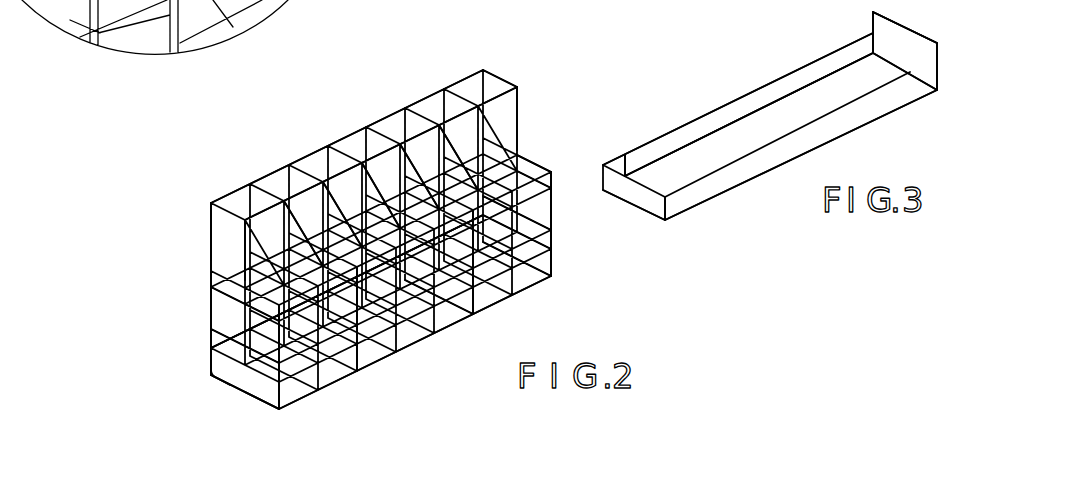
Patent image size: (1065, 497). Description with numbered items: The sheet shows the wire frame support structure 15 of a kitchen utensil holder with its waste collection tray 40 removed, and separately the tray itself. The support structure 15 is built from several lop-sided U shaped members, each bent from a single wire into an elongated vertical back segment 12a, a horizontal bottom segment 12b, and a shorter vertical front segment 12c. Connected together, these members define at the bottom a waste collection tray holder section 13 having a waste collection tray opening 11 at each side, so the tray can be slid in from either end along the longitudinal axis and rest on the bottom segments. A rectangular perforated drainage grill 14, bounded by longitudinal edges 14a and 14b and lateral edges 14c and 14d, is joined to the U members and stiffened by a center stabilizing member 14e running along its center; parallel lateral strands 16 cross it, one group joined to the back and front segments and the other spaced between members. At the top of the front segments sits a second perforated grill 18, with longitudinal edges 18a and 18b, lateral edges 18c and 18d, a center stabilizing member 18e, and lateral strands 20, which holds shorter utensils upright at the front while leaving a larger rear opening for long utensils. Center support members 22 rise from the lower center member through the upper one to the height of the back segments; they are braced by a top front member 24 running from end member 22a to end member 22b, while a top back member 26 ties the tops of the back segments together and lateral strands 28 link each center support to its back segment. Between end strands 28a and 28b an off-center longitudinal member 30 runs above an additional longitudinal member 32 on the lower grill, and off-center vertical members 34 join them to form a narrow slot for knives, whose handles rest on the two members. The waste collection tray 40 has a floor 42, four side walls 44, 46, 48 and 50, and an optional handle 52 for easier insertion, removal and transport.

In FIG. 2, the waste collection tray opening 11 is at (268, 395).
In FIG. 3, the waste collection tray opening 11 is at (722, 2).
In FIG. 2, the back segment 12a is at (210, 263).
In FIG. 2, the bottom segment 12b is at (210, 381).
In FIG. 2, the front segment 12c is at (281, 404).
In FIG. 2, the waste collection tray holder section 13 is at (552, 262).
In FIG. 2, the perforated drainage grill 14 is at (233, 347).
In FIG. 2, the longitudinal edge 14a is at (220, 333).
In FIG. 2, the longitudinal edge 14b is at (423, 332).
In FIG. 2, the lateral edge 14c is at (237, 363).
In FIG. 2, the lateral edge 14d is at (548, 237).
In FIG. 2, the center stabilizing member 14e is at (258, 378).
In FIG. 2, the support structure 15 is at (78, 318).
In FIG. 2, the lateral strands 16 is at (377, 352).
In FIG. 2, the perforated grill 18 is at (540, 167).
In FIG. 2, the longitudinal edge 18a is at (227, 263).
In FIG. 2, the longitudinal edge 18b is at (540, 187).
In FIG. 2, the lateral edge 18c is at (232, 297).
In FIG. 2, the lateral edge 18d is at (533, 167).
In FIG. 2, the center stabilizing member 18e is at (523, 167).
In FIG. 2, the lateral strands 20 is at (482, 252).
In FIG. 2, the center support members 22 is at (367, 140).
In FIG. 2, the center support member 22a is at (246, 212).
In FIG. 2, the center support member 22b is at (522, 90).
In FIG. 2, the top front member 24 is at (380, 133).
In FIG. 2, the top back member 26 is at (323, 167).
In FIG. 2, the lateral strands 28 is at (420, 110).
In FIG. 2, the lateral strand 28a is at (210, 210).
In FIG. 2, the lateral strand 28b is at (500, 88).
In FIG. 2, the off-center longitudinal member 30 is at (450, 100).
In FIG. 2, the additional longitudinal member 32 is at (252, 170).
In FIG. 2, the off-center vertical members 34 is at (458, 105).
In FIG. 3, the waste collection tray 40 is at (727, 97).
In FIG. 3, the floor 42 is at (712, 155).
In FIG. 3, the side wall 44 is at (865, 112).
In FIG. 3, the side wall 46 is at (652, 207).
In FIG. 3, the side wall 48 is at (675, 140).
In FIG. 3, the side wall 50 is at (910, 57).
In FIG. 3, the handle 52 is at (945, 43).